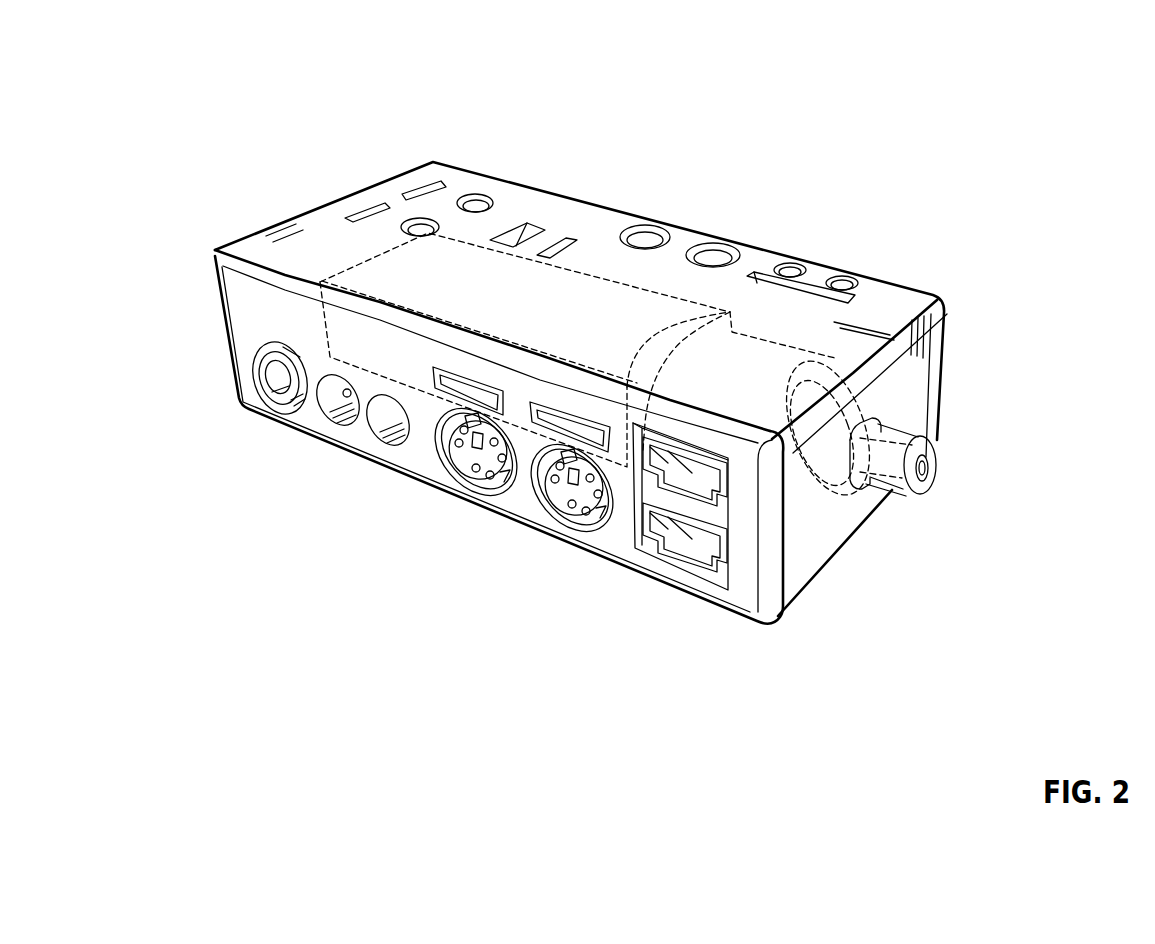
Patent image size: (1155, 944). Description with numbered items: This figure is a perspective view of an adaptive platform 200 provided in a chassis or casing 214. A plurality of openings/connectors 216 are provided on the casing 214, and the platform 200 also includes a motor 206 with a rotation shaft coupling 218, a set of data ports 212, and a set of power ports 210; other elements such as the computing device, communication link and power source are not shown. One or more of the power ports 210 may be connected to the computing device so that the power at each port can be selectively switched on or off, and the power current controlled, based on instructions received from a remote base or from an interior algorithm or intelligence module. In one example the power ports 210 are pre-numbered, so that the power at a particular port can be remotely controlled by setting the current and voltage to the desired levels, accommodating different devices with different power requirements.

The platform 200 is at (300, 88).
The motor 206 is at (783, 398).
The power ports 210 is at (417, 492).
The data ports 212 is at (728, 622).
The casing 214 is at (925, 290).
The openings/connectors 216 is at (902, 274).
The rotation shaft coupling 218 is at (915, 438).